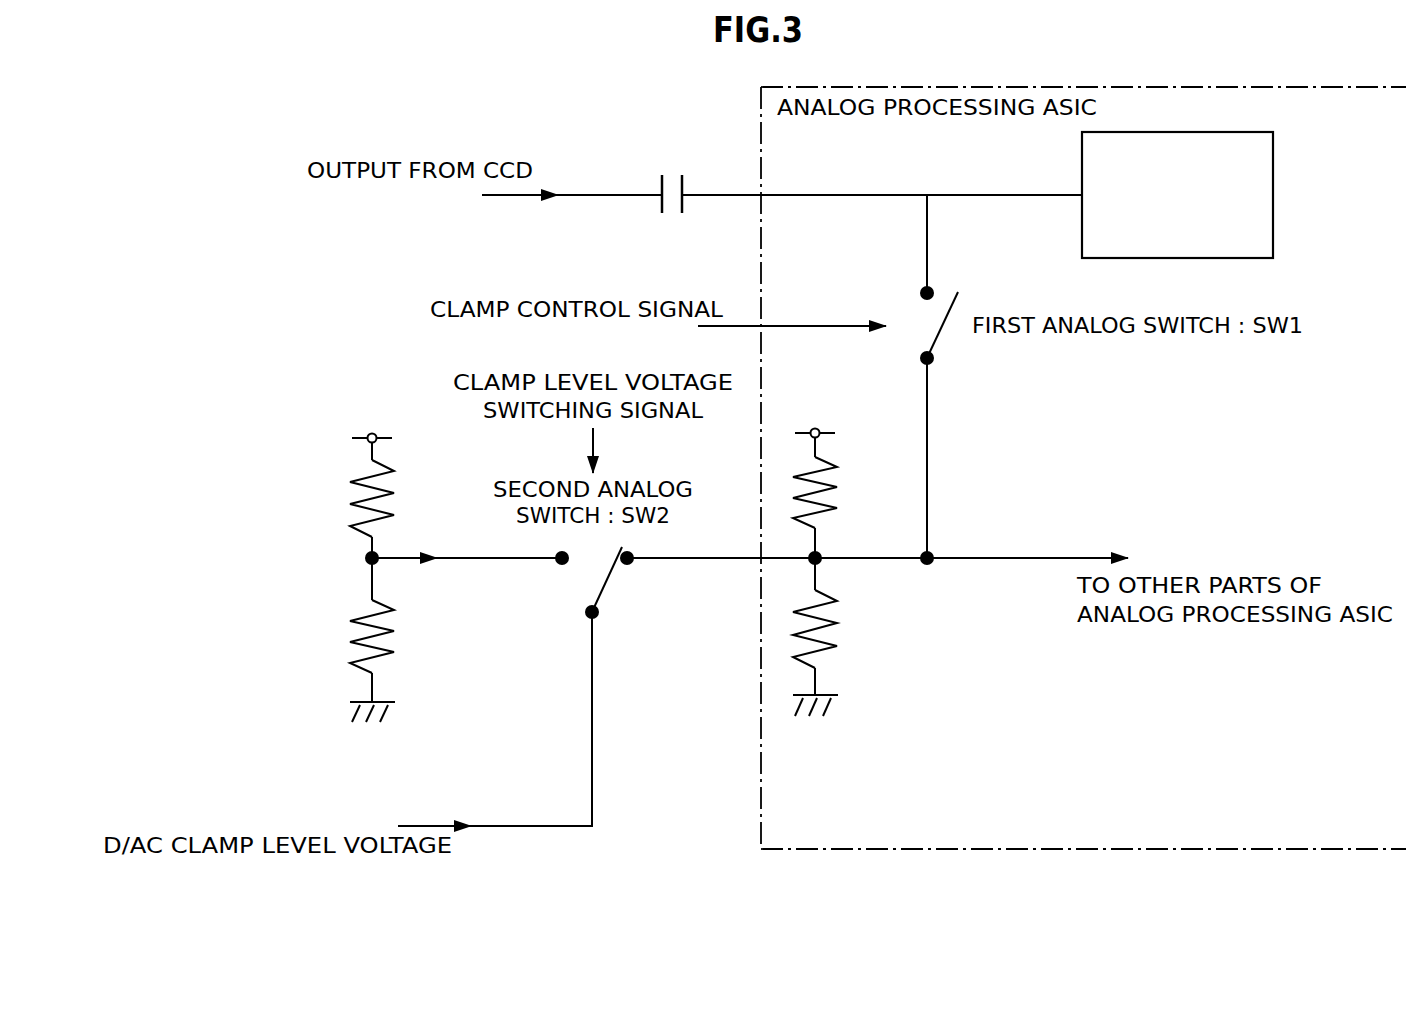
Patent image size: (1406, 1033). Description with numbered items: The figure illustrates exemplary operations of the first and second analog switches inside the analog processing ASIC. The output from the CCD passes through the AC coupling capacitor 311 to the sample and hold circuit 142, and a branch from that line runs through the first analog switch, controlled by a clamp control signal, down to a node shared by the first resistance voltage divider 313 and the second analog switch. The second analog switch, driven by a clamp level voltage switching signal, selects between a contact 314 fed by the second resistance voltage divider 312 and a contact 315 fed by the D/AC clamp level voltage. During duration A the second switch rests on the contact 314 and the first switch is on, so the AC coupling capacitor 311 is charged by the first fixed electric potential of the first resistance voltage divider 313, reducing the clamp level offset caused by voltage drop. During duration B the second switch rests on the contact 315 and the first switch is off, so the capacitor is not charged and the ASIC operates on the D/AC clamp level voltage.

The AC coupling capacitor 311 is at (671, 155).
The sample and hold circuit 142 is at (1275, 195).
The second resistance voltage divider 312 is at (271, 563).
The first resistance voltage divider 313 is at (858, 581).
The contact 314 is at (562, 568).
The contact 315 is at (633, 568).